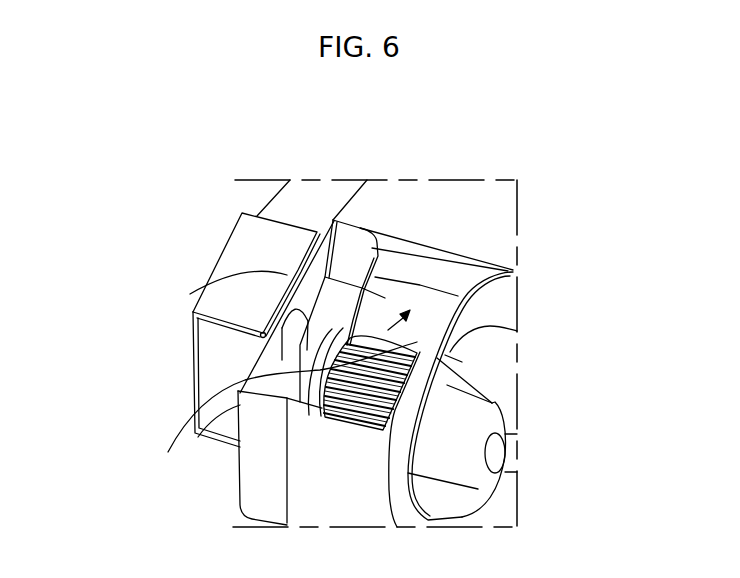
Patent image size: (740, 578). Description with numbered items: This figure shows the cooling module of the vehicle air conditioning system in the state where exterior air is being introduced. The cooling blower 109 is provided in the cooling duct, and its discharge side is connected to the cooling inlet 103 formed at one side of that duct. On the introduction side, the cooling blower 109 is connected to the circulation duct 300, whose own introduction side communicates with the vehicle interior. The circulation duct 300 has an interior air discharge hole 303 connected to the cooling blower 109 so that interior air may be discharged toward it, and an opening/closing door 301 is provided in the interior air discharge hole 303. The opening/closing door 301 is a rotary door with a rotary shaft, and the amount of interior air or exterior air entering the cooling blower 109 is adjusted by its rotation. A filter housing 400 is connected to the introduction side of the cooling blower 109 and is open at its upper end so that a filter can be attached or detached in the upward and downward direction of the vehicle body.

The circulation duct 300 is at (304, 201).
The opening/closing door 301 is at (215, 292).
The interior air discharge hole 303 is at (218, 378).
The filter housing 400 is at (243, 486).
The cooling inlet 103 is at (418, 266).
The cooling blower 109 is at (503, 401).